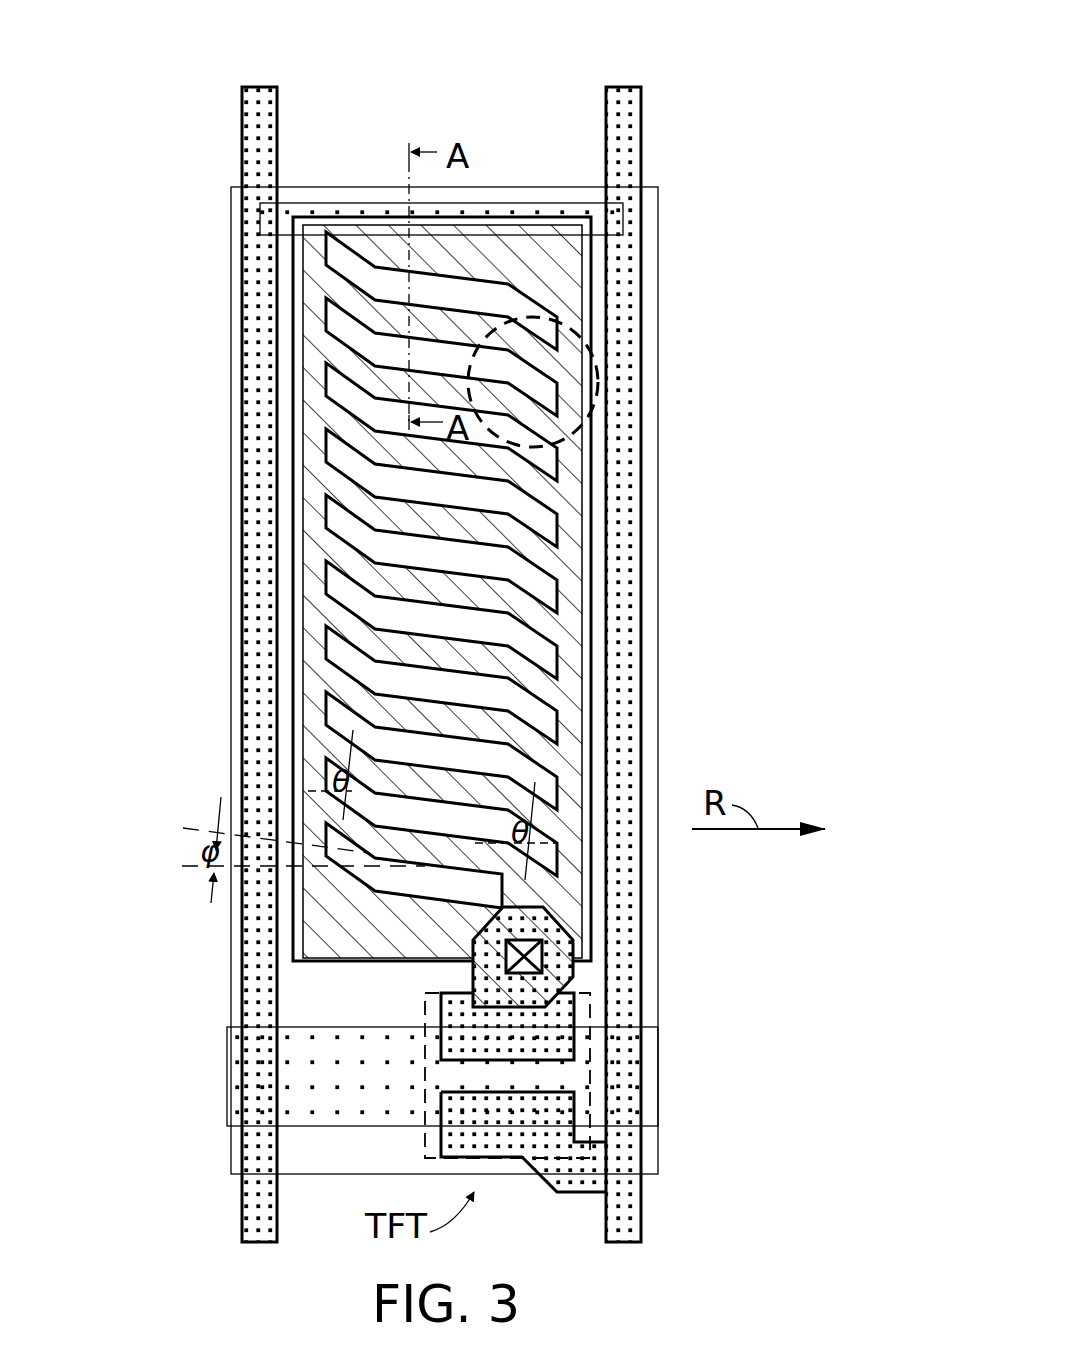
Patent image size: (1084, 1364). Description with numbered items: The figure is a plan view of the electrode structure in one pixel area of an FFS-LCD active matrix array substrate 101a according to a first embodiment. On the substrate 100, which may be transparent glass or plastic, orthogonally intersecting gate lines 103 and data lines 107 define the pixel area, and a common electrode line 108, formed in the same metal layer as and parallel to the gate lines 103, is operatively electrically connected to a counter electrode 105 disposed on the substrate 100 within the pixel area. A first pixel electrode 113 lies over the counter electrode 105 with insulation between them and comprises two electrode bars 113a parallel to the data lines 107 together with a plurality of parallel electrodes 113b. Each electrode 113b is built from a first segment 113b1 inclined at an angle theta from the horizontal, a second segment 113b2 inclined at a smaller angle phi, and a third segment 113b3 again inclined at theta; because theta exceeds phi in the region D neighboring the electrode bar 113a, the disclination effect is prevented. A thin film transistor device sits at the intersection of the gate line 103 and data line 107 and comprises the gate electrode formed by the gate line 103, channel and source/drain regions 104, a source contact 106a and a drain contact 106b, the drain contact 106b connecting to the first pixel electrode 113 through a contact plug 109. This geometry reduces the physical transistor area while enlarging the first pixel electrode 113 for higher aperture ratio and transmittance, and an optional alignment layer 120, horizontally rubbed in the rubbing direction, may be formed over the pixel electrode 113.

The active matrix array substrate 101a is at (674, 50).
The substrate 100 is at (368, 1164).
The gate line 103 is at (230, 1081).
The channel and source/drain regions 104 is at (557, 1077).
The counter electrode 105 is at (592, 598).
The source contact 106a is at (557, 1108).
The drain contact 106b is at (557, 1042).
The data line 107 is at (262, 385).
The common electrode line 108 is at (615, 219).
The contact plug 109 is at (550, 953).
The first pixel electrode 113 is at (436, 570).
The electrode bar 113a is at (328, 652).
The electrode 113b is at (484, 521).
The first segment 113b1 is at (343, 487).
The second segment 113b2 is at (437, 522).
The third segment 113b3 is at (523, 540).
The alignment layer 120 is at (660, 297).
The region D is at (597, 373).